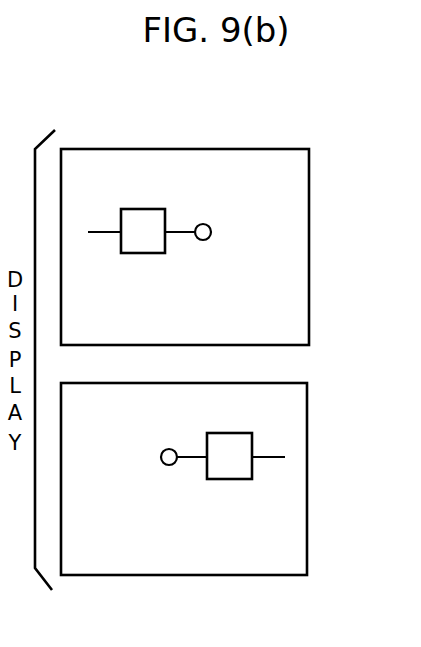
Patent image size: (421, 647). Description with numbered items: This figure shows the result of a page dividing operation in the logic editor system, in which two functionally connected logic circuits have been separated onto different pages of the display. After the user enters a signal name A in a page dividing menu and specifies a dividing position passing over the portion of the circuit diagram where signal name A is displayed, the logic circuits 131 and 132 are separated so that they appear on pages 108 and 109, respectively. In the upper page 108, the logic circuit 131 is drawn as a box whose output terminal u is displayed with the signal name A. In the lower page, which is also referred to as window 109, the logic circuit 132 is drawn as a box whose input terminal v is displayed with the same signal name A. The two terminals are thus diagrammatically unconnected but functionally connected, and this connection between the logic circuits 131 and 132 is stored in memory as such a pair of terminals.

The page 108 is at (309, 220).
The page 109 is at (307, 425).
The logic circuit 131 is at (149, 224).
The logic circuit 132 is at (223, 448).